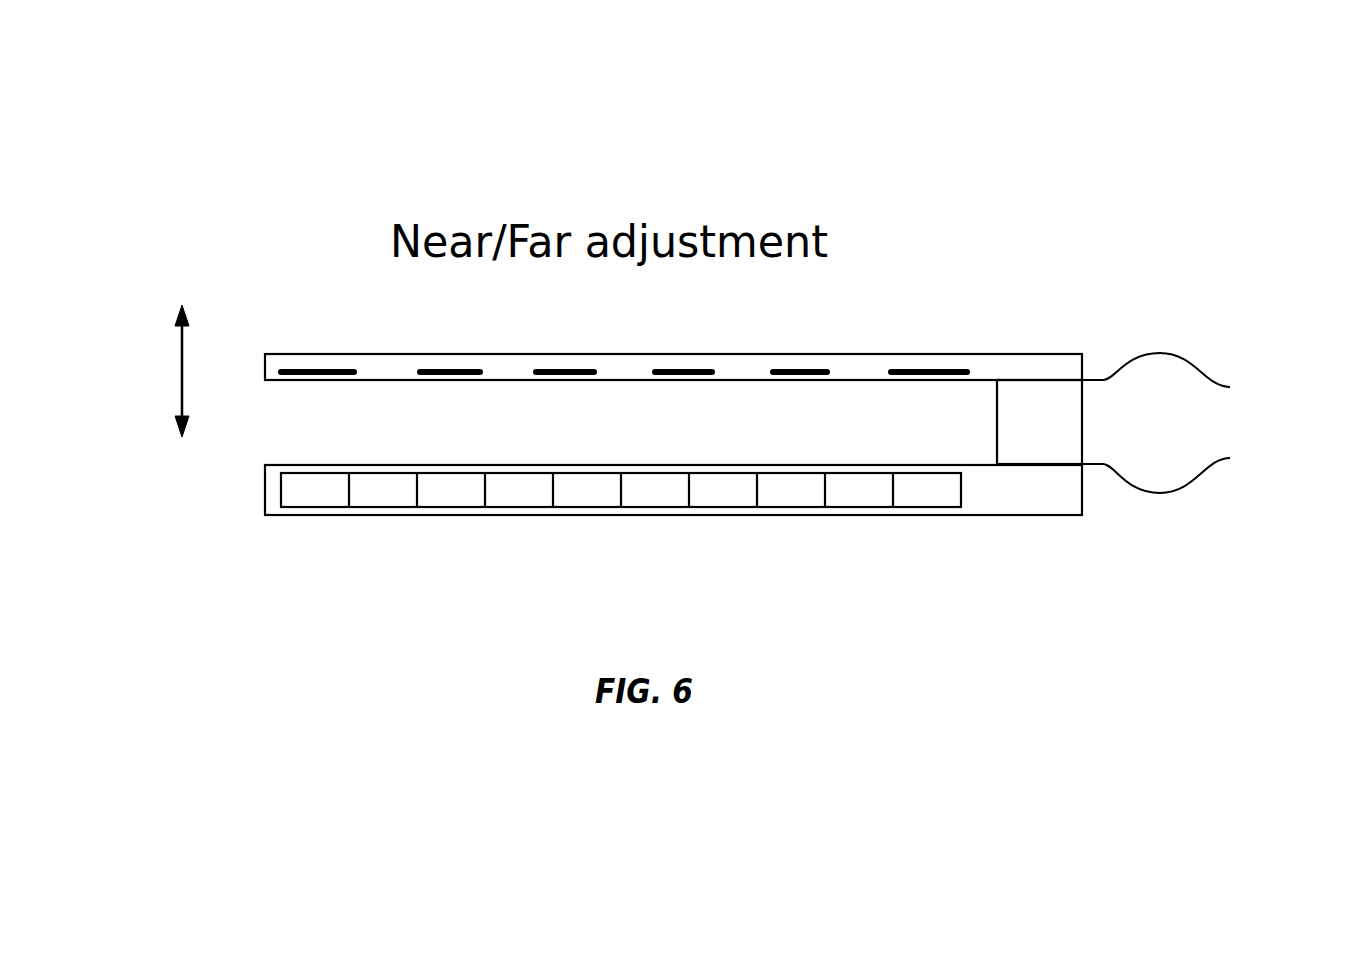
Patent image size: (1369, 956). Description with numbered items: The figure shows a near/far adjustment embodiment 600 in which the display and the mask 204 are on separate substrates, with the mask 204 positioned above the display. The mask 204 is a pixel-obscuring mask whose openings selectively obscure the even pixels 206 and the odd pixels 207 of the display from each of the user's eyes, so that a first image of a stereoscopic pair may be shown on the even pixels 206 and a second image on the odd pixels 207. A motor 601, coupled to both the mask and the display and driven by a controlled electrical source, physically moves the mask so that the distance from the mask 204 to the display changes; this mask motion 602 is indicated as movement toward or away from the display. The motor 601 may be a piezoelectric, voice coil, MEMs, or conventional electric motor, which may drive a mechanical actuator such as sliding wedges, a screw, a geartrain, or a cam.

The near/far adjustment system 600 is at (267, 109).
The mask motion 602 is at (182, 343).
The mask 204 is at (316, 354).
The even pixels 206 is at (314, 507).
The odd pixels 207 is at (382, 507).
The motor 601 is at (1064, 452).